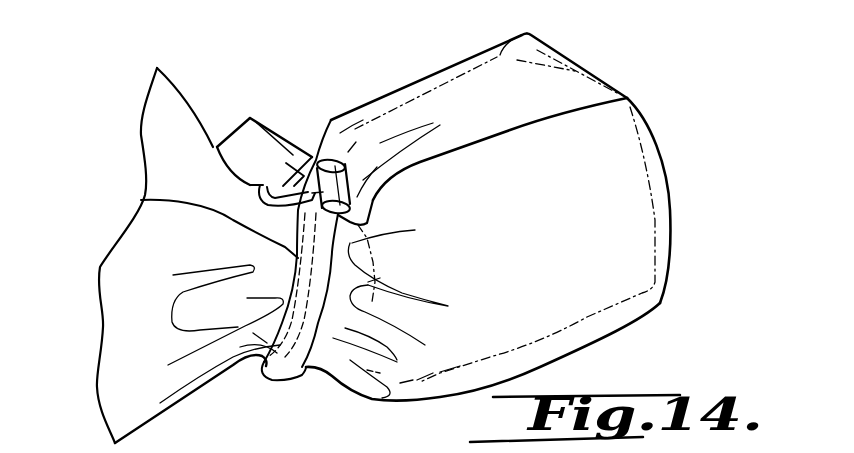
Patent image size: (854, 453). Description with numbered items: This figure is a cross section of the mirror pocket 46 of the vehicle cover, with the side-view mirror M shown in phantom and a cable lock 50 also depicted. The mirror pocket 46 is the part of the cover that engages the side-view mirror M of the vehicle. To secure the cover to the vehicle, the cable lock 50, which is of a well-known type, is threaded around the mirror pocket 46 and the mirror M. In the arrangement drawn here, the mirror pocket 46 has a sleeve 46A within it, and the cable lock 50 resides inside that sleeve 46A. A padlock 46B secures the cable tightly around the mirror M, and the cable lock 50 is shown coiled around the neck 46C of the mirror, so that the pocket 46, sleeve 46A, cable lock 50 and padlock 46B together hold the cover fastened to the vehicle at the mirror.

The mirror pocket 46 is at (678, 107).
The sleeve 46A is at (141, 200).
The padlock 46B is at (250, 118).
The neck 46C is at (233, 192).
The cable lock 50 is at (333, 117).
The side-view mirror M is at (530, 30).